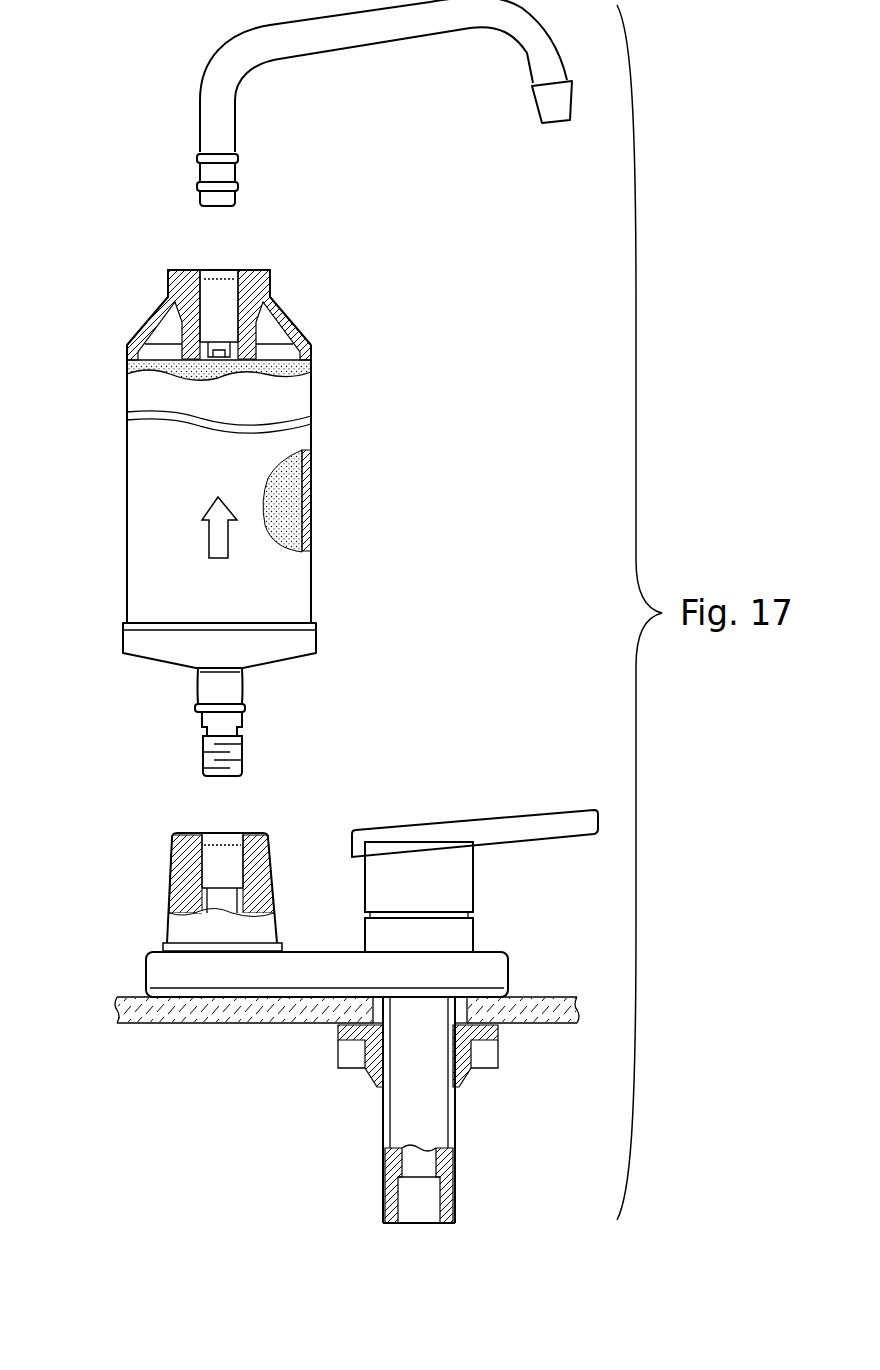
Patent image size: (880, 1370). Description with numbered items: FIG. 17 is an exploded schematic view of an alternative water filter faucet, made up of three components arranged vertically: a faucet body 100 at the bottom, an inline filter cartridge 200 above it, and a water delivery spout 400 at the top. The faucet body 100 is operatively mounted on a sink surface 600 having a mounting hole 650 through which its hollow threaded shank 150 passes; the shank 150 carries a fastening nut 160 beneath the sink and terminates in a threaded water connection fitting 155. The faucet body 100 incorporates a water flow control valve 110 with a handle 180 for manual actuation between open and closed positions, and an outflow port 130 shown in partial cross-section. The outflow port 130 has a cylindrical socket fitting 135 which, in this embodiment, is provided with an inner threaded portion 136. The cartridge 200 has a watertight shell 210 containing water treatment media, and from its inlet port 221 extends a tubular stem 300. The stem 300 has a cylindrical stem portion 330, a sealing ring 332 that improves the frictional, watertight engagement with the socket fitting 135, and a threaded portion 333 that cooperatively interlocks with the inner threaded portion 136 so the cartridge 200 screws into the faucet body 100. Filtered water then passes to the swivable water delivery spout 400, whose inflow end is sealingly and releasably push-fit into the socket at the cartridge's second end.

The faucet body 100 is at (340, 988).
The water flow control valve 110 is at (450, 933).
The water outflow port 130 is at (208, 882).
The socket fitting 135 is at (220, 862).
The inner threaded portion 136 is at (220, 900).
The threaded shank 150 is at (428, 1120).
The water connection fitting 155 is at (415, 1200).
The fastening nut 160 is at (490, 1055).
The handle 180 is at (497, 828).
The filter cartridge 200 is at (275, 526).
The watertight shell 210 is at (148, 488).
The inlet port 221 is at (243, 678).
The tubular stem 300 is at (234, 717).
The stem portion 330 is at (243, 718).
The sealing ring 332 is at (196, 706).
The threaded portion 333 is at (203, 756).
The water delivery spout 400 is at (358, 104).
The sink surface 600 is at (212, 1013).
The mounting hole 650 is at (378, 1012).